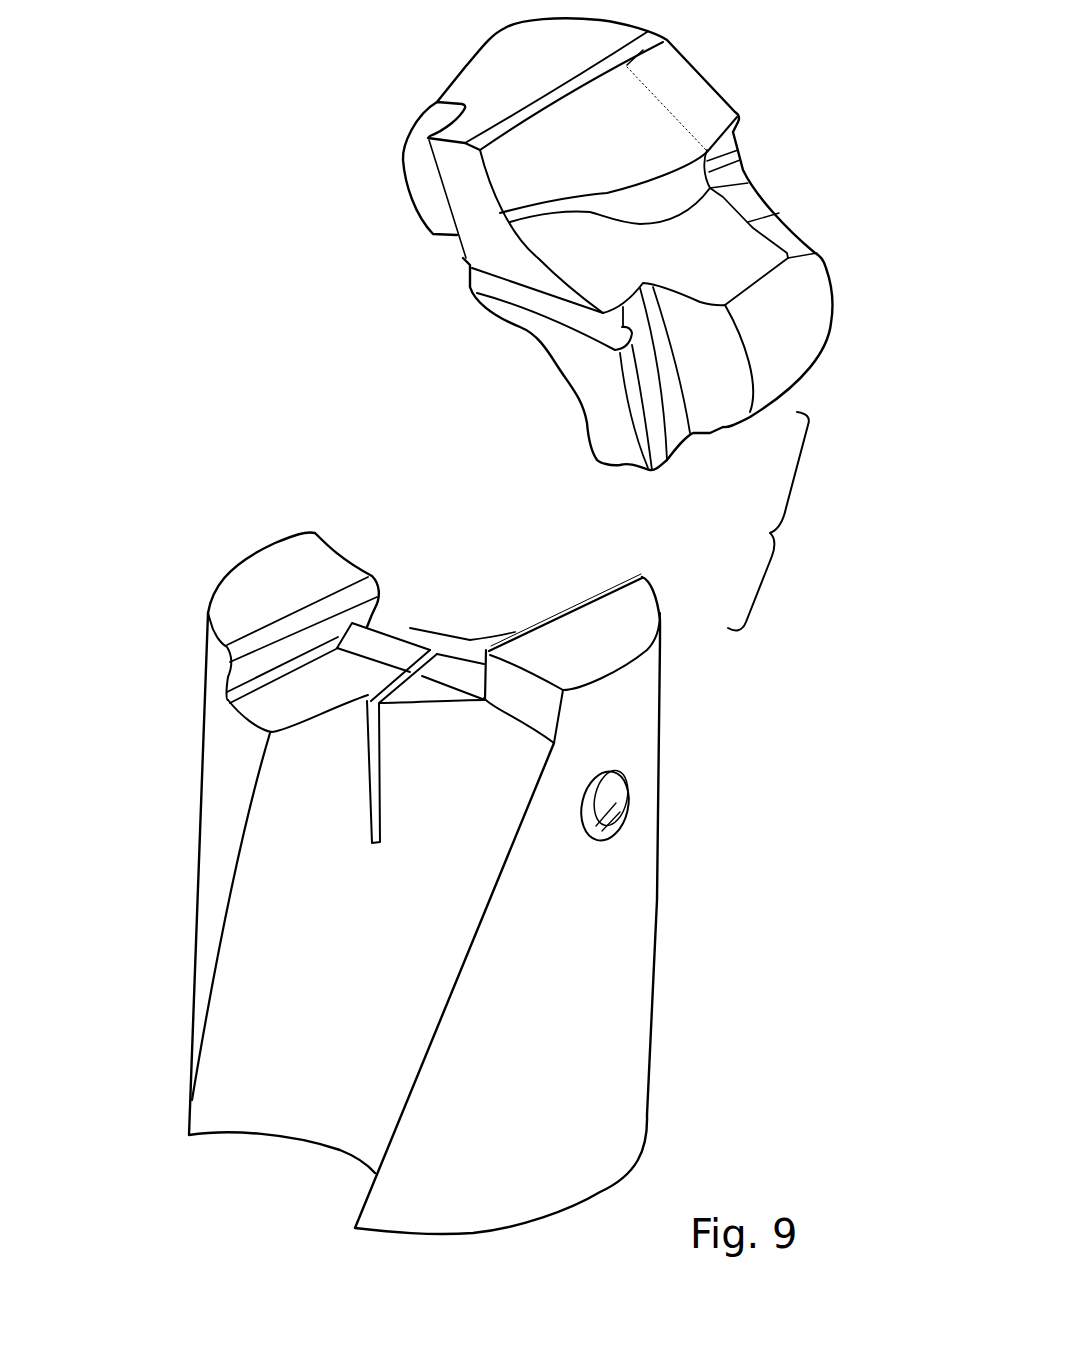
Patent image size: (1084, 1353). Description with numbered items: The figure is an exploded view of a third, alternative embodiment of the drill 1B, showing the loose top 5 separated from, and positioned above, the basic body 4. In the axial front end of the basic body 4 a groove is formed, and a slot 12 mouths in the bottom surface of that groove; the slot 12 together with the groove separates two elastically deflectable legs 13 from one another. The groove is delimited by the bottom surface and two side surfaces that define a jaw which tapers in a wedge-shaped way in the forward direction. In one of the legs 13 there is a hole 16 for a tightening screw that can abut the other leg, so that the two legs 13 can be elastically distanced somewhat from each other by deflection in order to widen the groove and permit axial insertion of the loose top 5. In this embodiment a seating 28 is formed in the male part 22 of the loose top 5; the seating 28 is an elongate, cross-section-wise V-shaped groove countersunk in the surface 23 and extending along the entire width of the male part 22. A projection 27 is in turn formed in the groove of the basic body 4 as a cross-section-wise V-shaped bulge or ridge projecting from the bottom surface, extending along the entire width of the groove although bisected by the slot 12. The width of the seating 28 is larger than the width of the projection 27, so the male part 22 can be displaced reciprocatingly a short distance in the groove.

The drill 1B is at (302, 420).
The basic body 4 is at (415, 883).
The loose top 5 is at (666, 324).
The slot 12 is at (375, 782).
The elastically deflectable legs 13 is at (210, 674).
The hole 16 is at (626, 802).
The male part 22 is at (631, 470).
The surface 23 is at (478, 243).
The projection 27 is at (424, 645).
The seating 28 is at (533, 303).